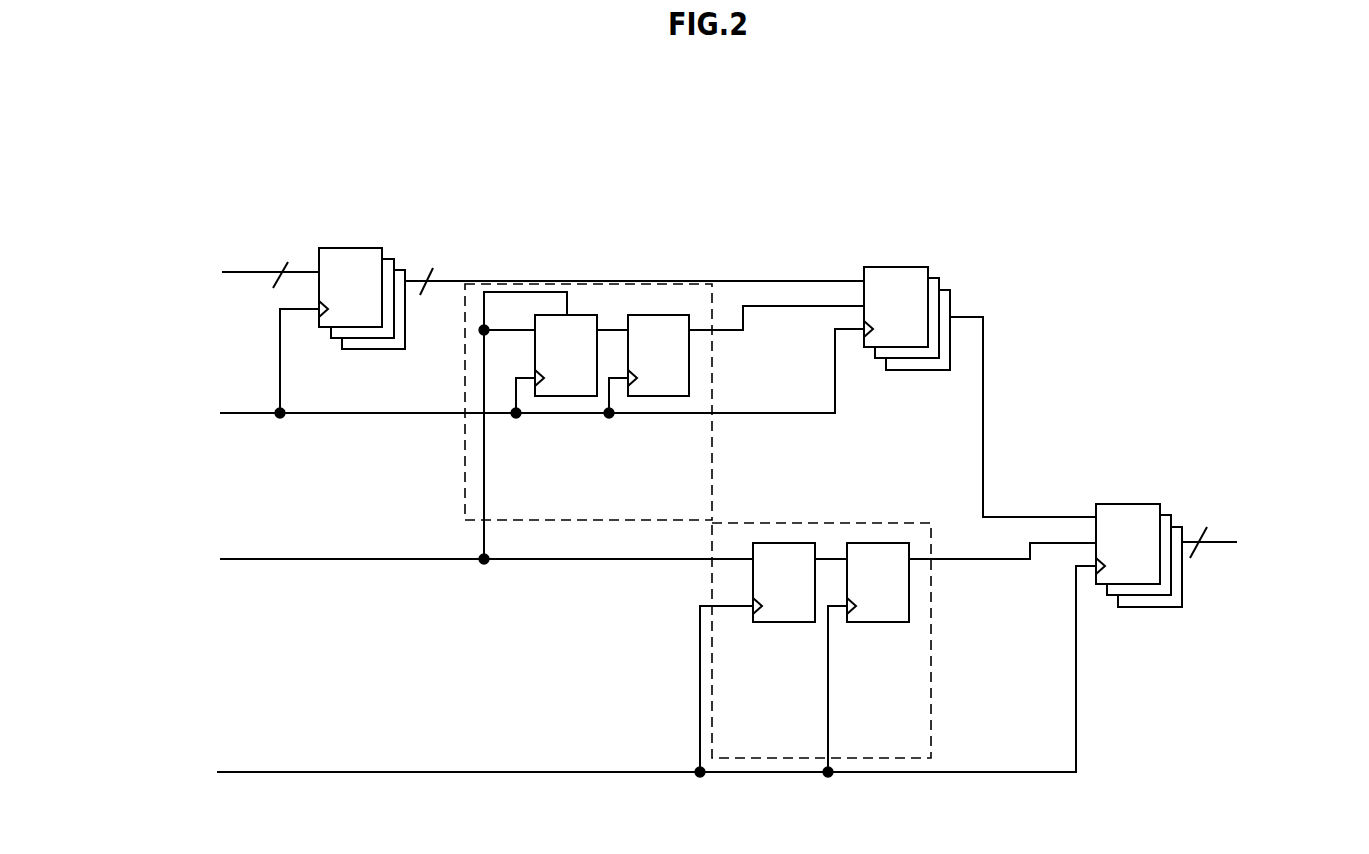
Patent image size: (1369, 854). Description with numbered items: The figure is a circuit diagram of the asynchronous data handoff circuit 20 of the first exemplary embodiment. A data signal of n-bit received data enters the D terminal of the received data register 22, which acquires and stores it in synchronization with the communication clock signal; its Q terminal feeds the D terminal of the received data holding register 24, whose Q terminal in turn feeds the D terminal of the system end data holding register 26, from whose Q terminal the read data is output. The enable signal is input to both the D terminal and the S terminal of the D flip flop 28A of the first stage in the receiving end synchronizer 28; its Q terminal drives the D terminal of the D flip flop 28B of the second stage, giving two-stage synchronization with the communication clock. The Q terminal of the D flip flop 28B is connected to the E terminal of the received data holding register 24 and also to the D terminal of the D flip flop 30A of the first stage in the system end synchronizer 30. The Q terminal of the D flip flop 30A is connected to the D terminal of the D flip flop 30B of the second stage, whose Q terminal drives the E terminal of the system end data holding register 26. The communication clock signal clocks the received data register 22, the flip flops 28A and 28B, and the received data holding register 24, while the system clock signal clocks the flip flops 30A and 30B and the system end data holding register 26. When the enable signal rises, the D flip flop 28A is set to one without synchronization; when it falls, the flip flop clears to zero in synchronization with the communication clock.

The asynchronous data handoff circuit 20 is at (681, 171).
The received data register 22 is at (312, 330).
The received data holding register 24 is at (858, 266).
The system end data holding register 26 is at (1088, 503).
The receiving end synchronizer 28 is at (579, 472).
The D flip flop of a first stage 28A is at (563, 396).
The D flip flop of a second stage 28B is at (655, 396).
The system end synchronizer 30 is at (834, 599).
The D flip flop of a first stage 30A is at (778, 622).
The D flip flop of a second stage 30B is at (872, 622).